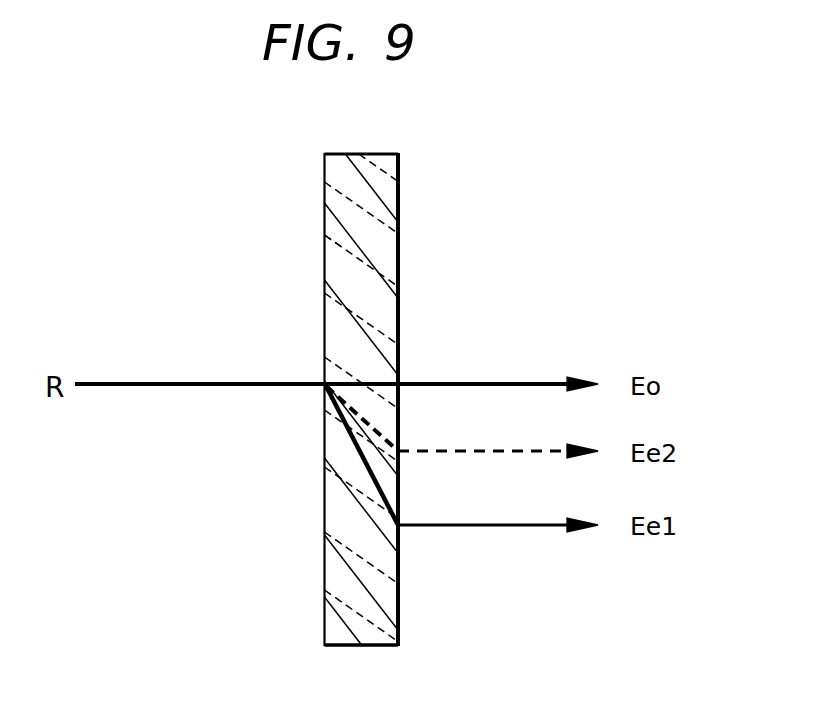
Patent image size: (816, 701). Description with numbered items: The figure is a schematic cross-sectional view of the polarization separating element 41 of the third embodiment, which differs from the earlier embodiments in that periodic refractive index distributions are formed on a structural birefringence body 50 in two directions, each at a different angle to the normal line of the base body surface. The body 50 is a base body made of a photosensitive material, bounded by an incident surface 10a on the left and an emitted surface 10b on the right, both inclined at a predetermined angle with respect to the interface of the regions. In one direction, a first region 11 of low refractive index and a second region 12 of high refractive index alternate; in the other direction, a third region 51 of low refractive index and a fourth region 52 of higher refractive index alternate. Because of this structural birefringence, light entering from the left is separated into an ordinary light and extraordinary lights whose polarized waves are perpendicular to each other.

The polarization separating element 41 is at (157, 211).
The structural birefringence body 50 is at (399, 198).
The incident surface 10a is at (323, 192).
The emitted surface 10b is at (399, 248).
The first region 11 is at (343, 567).
The second region 12 is at (337, 518).
The third region 51 is at (341, 248).
The fourth region 52 is at (323, 227).